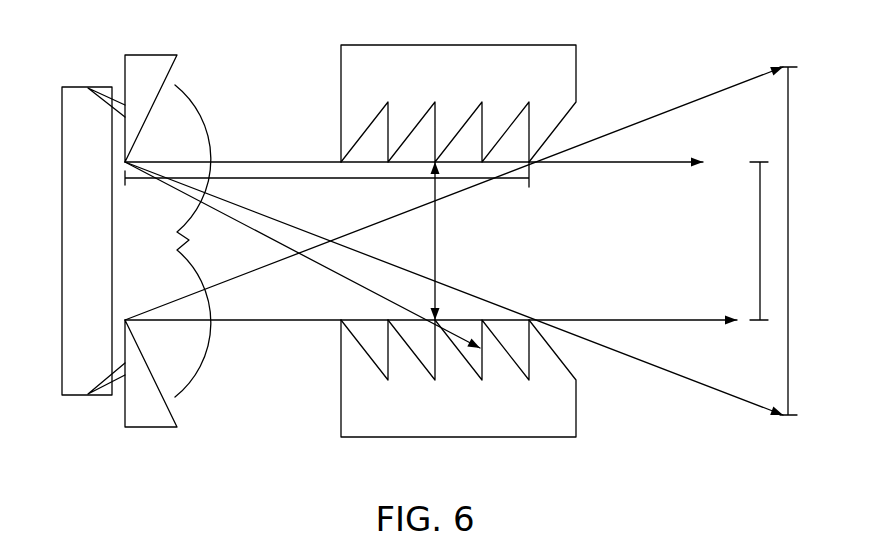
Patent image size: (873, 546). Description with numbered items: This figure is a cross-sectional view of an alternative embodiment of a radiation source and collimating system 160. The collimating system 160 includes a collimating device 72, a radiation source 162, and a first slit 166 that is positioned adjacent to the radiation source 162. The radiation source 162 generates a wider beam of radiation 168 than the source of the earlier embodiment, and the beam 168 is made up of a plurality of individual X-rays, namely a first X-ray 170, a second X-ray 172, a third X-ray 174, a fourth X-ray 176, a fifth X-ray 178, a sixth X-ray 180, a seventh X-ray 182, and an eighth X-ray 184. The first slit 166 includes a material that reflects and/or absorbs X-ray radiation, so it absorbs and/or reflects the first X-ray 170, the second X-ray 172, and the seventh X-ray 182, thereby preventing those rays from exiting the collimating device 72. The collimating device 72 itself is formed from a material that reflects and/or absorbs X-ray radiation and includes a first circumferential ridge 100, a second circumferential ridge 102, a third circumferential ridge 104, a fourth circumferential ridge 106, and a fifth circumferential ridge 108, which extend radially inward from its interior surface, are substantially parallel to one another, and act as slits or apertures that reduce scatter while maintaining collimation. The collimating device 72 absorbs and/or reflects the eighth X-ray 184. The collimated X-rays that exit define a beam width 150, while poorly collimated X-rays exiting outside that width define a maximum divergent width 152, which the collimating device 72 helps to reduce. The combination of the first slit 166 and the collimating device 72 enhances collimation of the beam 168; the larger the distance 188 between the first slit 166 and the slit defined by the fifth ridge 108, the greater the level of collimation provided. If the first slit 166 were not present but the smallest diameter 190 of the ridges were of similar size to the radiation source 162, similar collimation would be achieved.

The radiation source 162 is at (68, 86).
The seventh X-ray 182 is at (100, 87).
The second X-ray 172 is at (91, 390).
The first slit 166 is at (173, 68).
The first X-ray 170 is at (100, 396).
The beam of radiation 168 is at (189, 240).
The sixth X-ray 180 is at (288, 161).
The third X-ray 174 is at (137, 317).
The fourth X-ray 176 is at (152, 308).
The fifth X-ray 178 is at (303, 229).
The eighth X-ray 184 is at (303, 258).
The distance 188 is at (368, 179).
The smallest diameter 190 is at (436, 229).
The collimating device 72 is at (576, 60).
The fifth circumferential ridge 108 is at (532, 150).
The first circumferential ridge 100 is at (341, 339).
The second circumferential ridge 102 is at (384, 362).
The third circumferential ridge 104 is at (433, 355).
The fourth circumferential ridge 106 is at (482, 330).
The beam width 150 is at (758, 205).
The maximum divergent width 152 is at (788, 241).
The collimating system 160 is at (683, 47).